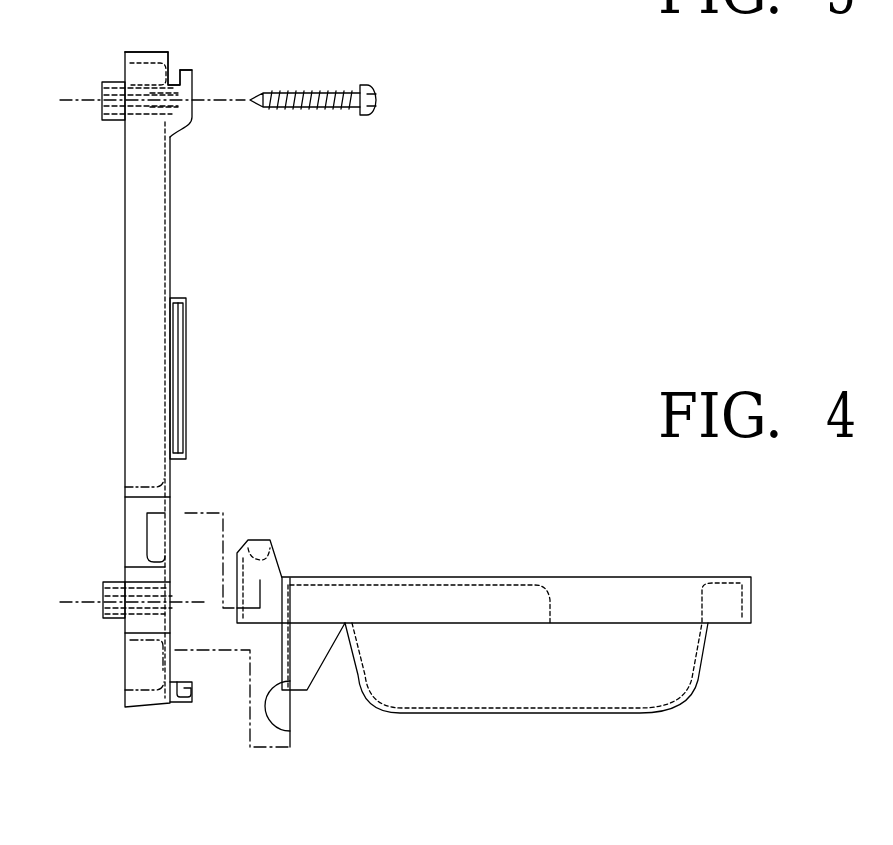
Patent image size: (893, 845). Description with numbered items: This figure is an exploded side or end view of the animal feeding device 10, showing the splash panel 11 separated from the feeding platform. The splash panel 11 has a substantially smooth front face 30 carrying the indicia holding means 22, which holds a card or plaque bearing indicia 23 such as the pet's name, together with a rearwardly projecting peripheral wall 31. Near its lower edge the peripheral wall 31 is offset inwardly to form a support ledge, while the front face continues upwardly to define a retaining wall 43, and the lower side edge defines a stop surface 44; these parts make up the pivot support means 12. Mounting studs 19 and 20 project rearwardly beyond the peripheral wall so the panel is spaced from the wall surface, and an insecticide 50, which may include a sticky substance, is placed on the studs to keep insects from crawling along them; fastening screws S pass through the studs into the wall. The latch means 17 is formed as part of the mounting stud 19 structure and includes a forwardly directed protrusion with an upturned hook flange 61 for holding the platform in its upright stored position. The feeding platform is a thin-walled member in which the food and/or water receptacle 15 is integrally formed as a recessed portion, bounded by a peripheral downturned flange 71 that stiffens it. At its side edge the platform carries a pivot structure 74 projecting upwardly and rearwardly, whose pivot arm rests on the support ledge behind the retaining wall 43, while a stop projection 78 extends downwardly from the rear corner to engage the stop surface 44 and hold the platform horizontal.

The animal feeding device 10 is at (228, 755).
The splash panel 11 is at (172, 265).
The pivot support means 12 is at (187, 505).
The food and/or water receptacle 15 is at (535, 713).
The latch means 17 is at (201, 70).
The mounting stud 19 is at (110, 82).
The mounting stud 20 is at (110, 618).
The indicia holding means 22 is at (186, 303).
The indicia 23 is at (178, 372).
The front face 30 is at (170, 213).
The peripheral wall 31 is at (138, 51).
The retaining wall 43 is at (151, 548).
The stop surface 44 is at (172, 658).
The insecticide 50 is at (108, 122).
The hook flange 61 is at (175, 55).
The downturned flange 71 is at (528, 622).
The pivot structure 74 is at (284, 545).
The stop projection 78 is at (292, 730).
The fastening screw S is at (322, 108).